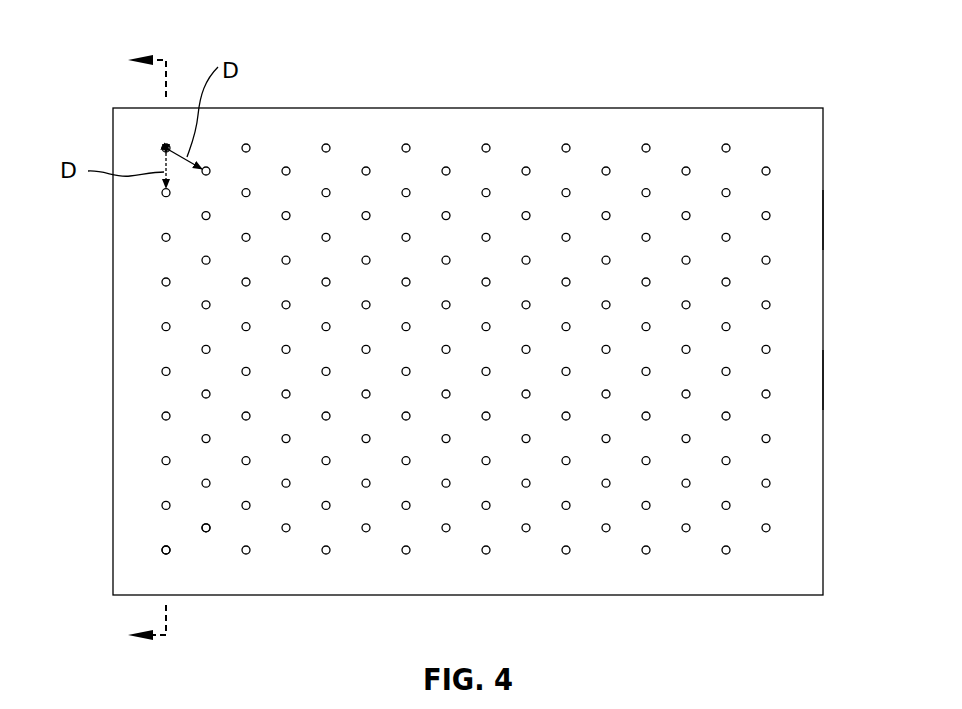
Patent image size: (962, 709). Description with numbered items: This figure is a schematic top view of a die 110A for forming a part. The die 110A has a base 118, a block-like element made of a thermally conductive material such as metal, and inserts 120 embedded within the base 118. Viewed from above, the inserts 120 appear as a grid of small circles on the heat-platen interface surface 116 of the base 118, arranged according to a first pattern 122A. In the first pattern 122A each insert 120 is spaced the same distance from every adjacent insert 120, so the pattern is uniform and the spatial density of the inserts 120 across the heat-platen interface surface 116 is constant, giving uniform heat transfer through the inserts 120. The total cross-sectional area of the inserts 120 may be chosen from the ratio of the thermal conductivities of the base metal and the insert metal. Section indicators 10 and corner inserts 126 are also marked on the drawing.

The section line 10- 10 is at (147, 349).
The die 110A is at (828, 145).
The heat-platen interface surface 116 is at (800, 212).
The base 118 is at (823, 380).
The inserts 120 is at (168, 144).
The first pattern 122A is at (140, 143).
The edge holes 126 is at (161, 562).